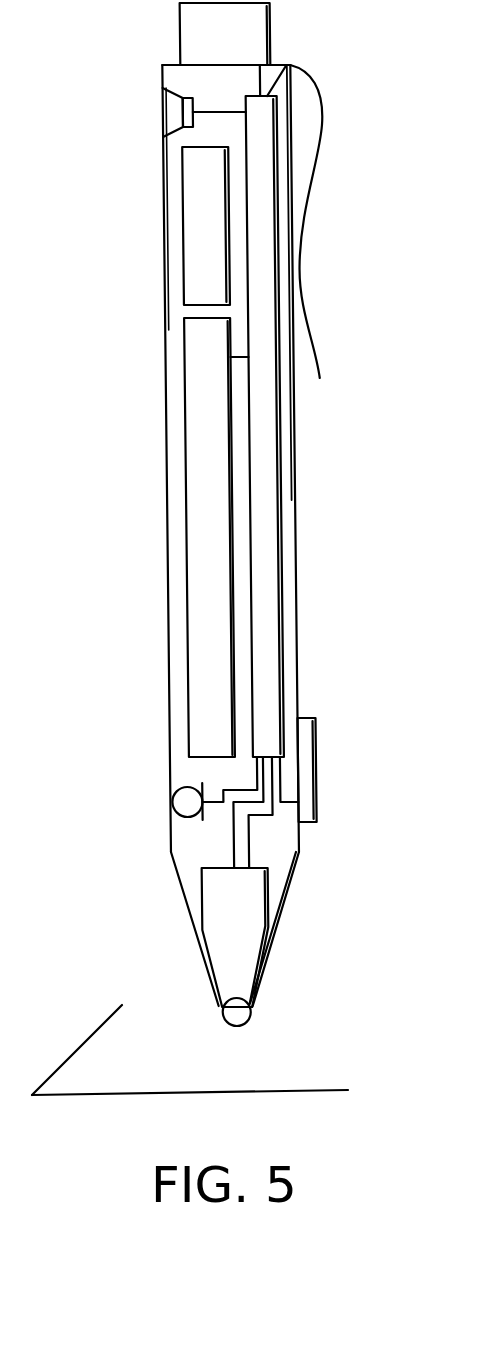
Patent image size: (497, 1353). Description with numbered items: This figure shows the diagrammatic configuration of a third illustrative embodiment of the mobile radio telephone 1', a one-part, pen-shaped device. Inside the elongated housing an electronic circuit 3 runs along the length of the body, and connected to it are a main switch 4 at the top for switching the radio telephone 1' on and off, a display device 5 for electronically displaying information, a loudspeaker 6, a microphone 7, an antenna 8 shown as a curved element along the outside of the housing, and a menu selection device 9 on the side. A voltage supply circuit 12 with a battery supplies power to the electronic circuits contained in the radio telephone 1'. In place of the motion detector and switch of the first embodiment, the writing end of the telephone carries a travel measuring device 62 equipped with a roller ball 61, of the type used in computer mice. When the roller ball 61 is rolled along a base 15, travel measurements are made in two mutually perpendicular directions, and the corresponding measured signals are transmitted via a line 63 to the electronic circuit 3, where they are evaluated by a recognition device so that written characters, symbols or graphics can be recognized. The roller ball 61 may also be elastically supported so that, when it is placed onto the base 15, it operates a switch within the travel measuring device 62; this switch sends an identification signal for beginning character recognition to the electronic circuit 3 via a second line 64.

The radio telephone 1' is at (255, 535).
The electronic circuit 3 is at (285, 507).
The main switch 4 is at (273, 27).
The display device 5 is at (197, 357).
The loudspeaker 6 is at (162, 108).
The microphone 7 is at (172, 800).
The antenna 8 is at (325, 125).
The menu selection device 9 is at (325, 745).
The voltage supply circuit 12 is at (193, 175).
The base 15 is at (97, 1095).
The roller ball 61 is at (247, 1030).
The travel measuring device 62 is at (253, 953).
The line 63 is at (233, 848).
The line 64 is at (252, 843).